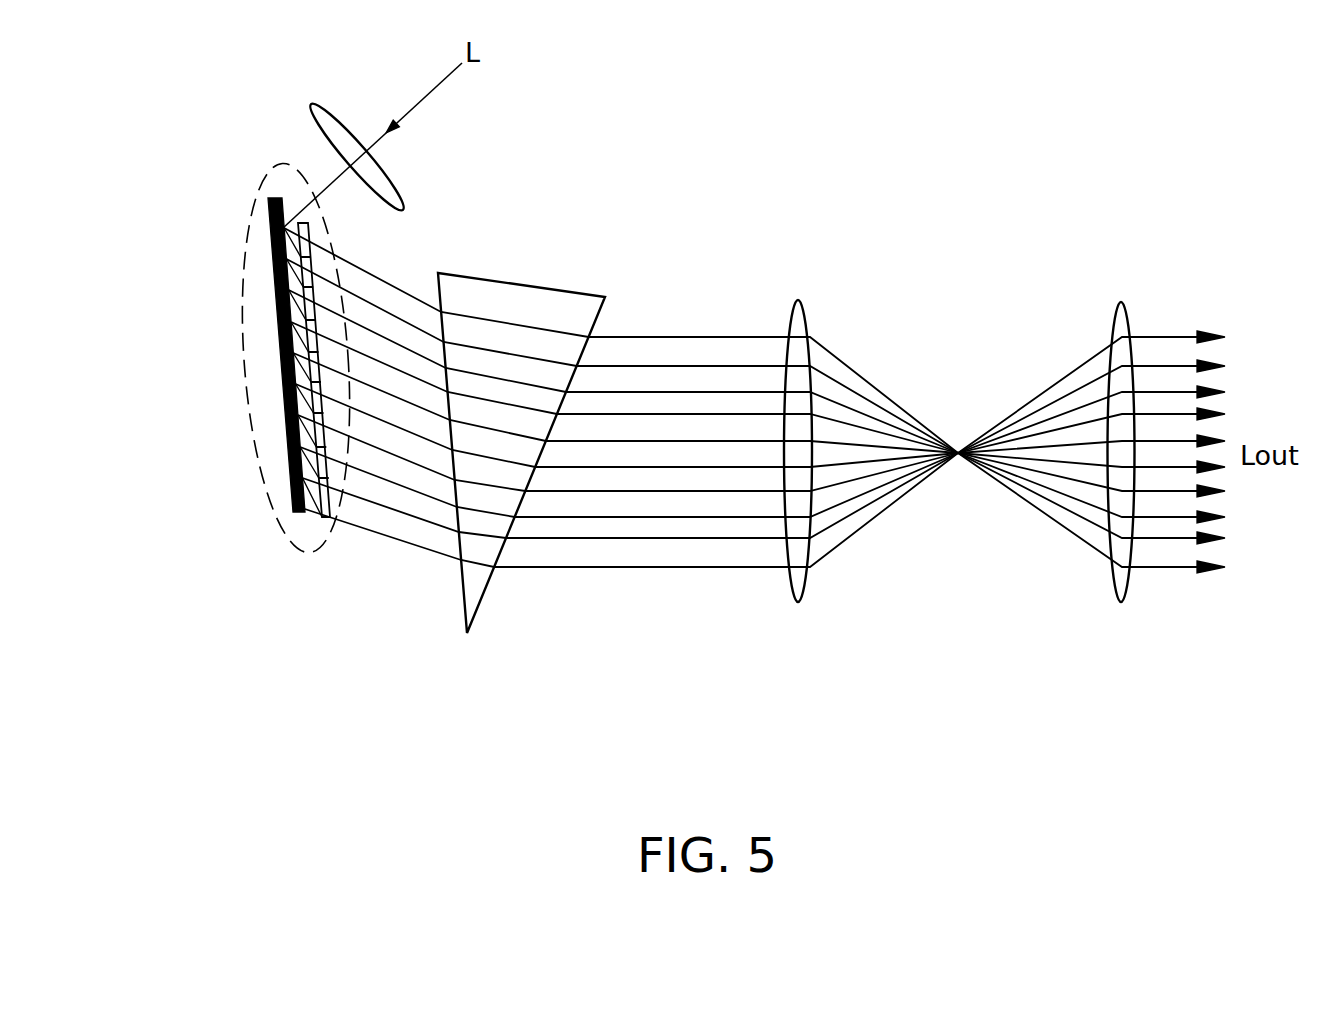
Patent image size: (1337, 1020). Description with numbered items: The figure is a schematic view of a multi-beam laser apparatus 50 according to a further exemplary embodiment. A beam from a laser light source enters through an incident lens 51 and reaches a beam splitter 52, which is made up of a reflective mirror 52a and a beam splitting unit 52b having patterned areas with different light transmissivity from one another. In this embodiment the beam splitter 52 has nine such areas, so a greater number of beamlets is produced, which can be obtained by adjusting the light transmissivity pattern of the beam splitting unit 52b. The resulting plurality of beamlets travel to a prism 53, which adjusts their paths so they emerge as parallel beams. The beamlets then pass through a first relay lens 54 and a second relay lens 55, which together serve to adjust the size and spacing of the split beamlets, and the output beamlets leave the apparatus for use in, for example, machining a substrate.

The multi-beam laser apparatus 50 is at (835, 218).
The incident lens 51 is at (398, 185).
The beam splitter 52 is at (288, 540).
The reflective mirror 52a is at (283, 353).
The beam splitting unit 52b is at (323, 520).
The prism 53 is at (482, 600).
The first relay lens 54 is at (798, 602).
The second relay lens 55 is at (1122, 602).